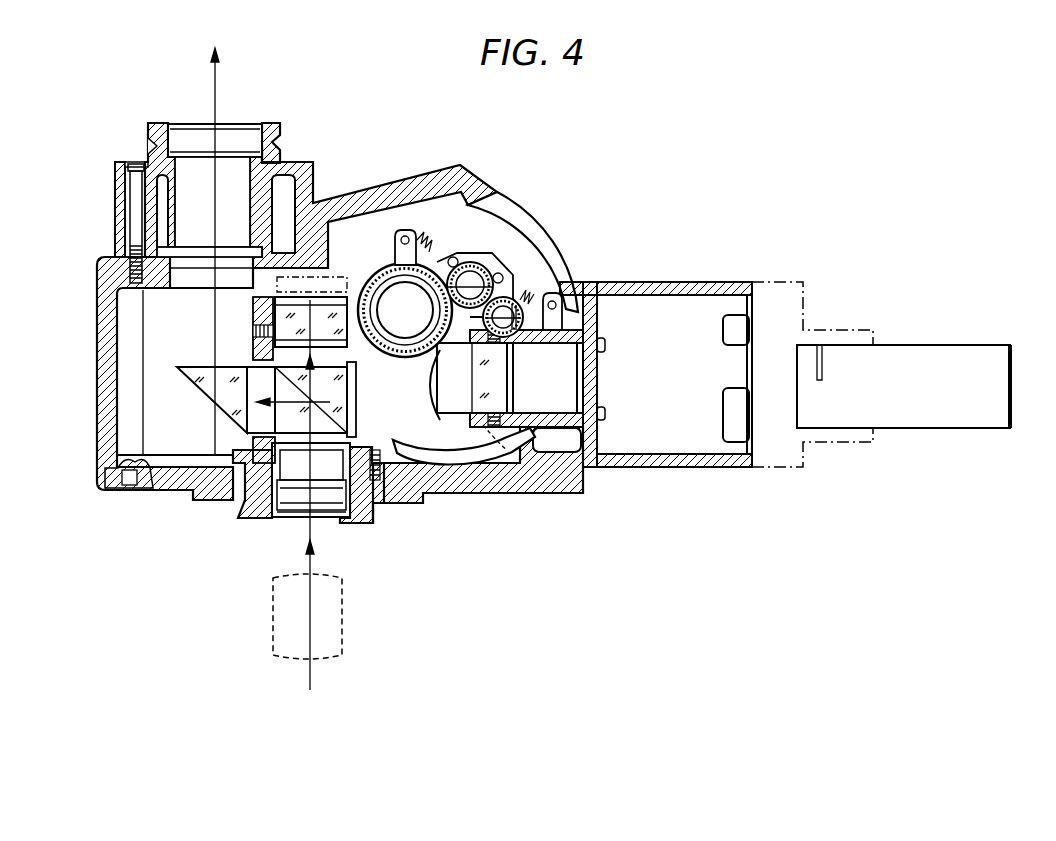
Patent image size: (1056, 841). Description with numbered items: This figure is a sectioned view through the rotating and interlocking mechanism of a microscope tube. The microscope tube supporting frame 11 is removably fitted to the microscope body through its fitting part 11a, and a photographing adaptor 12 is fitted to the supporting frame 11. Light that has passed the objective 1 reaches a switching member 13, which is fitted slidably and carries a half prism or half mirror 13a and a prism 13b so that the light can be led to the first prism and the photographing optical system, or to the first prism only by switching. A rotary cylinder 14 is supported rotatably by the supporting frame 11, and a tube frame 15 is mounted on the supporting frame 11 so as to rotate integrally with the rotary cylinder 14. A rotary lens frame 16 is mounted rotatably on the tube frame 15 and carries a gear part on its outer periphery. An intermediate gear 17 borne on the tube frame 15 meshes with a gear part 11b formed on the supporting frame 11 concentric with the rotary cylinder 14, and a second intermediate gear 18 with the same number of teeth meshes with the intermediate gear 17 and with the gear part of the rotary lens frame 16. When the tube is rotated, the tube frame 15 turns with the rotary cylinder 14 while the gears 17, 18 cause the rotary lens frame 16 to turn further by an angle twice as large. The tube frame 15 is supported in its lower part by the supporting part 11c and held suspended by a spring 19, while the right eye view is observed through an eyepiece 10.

The objective 1 is at (272, 606).
The eyepiece 10 is at (937, 345).
The microscope tube supporting frame 11 is at (100, 296).
The fitting part 11a is at (243, 508).
The gear part 11b is at (459, 343).
The supporting part 11c is at (557, 440).
The photographing adaptor 12 is at (160, 123).
The switching member 13 is at (354, 470).
The half prism or half mirror 13a is at (342, 392).
The prism 13b is at (200, 367).
The rotary cylinder 14 is at (416, 354).
The tube frame 15 is at (679, 468).
The rotary lens frame 16 is at (447, 428).
The intermediate gear 17 is at (471, 268).
The intermediate gear 18 is at (529, 289).
The spring 19 is at (462, 260).